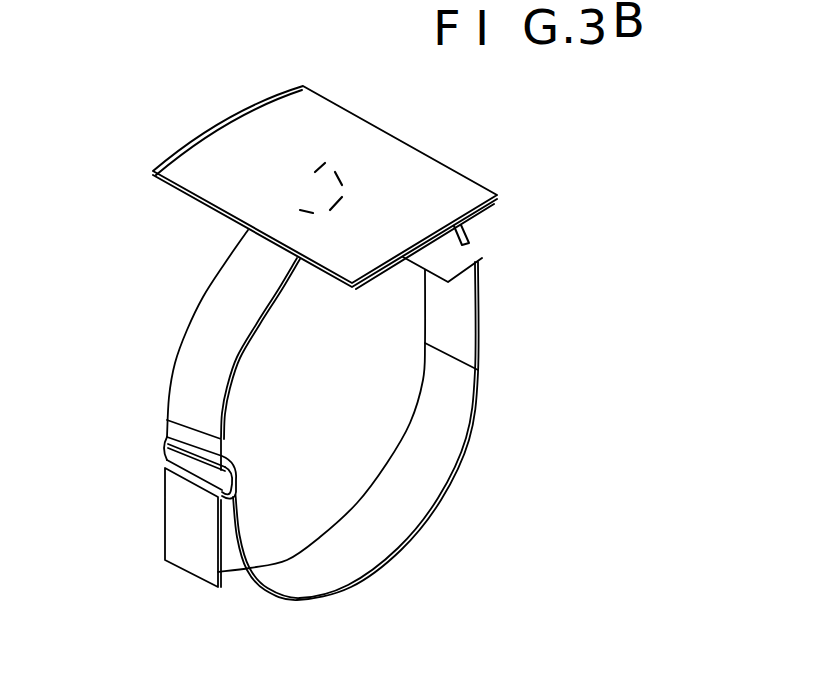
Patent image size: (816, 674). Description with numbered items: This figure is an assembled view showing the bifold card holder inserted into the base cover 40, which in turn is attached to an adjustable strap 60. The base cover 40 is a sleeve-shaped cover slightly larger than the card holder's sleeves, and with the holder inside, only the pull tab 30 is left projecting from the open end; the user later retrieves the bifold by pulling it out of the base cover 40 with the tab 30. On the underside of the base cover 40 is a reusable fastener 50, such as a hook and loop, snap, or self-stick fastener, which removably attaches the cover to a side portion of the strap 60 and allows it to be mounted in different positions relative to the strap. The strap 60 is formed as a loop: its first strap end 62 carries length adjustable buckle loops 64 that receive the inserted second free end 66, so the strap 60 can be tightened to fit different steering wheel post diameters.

The tab 30 is at (460, 267).
The base cover 40 is at (445, 132).
The reusable fastener 50 is at (315, 192).
The adjustable strap 60 is at (603, 353).
The first strap end 62 is at (183, 408).
The length adjustable buckle loops 64 is at (237, 477).
The second free end 66 is at (187, 543).